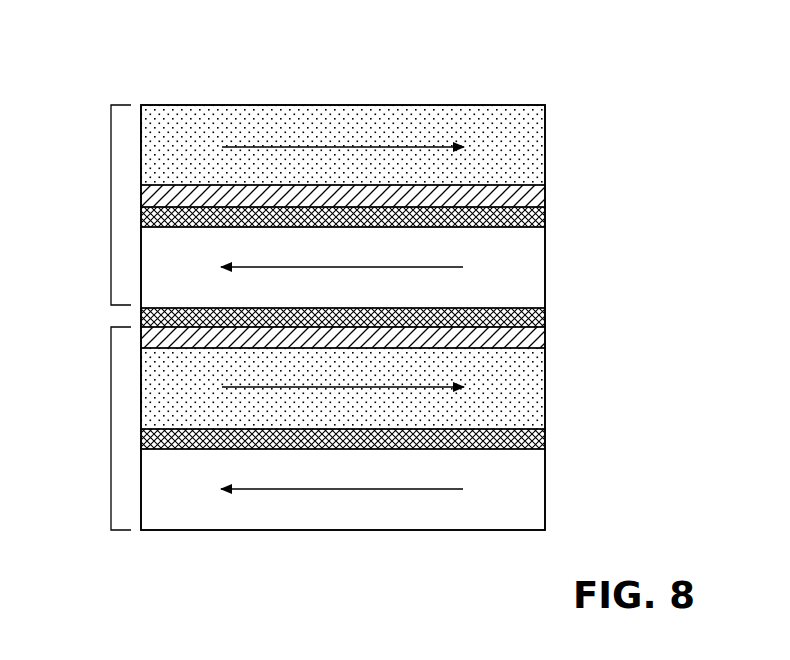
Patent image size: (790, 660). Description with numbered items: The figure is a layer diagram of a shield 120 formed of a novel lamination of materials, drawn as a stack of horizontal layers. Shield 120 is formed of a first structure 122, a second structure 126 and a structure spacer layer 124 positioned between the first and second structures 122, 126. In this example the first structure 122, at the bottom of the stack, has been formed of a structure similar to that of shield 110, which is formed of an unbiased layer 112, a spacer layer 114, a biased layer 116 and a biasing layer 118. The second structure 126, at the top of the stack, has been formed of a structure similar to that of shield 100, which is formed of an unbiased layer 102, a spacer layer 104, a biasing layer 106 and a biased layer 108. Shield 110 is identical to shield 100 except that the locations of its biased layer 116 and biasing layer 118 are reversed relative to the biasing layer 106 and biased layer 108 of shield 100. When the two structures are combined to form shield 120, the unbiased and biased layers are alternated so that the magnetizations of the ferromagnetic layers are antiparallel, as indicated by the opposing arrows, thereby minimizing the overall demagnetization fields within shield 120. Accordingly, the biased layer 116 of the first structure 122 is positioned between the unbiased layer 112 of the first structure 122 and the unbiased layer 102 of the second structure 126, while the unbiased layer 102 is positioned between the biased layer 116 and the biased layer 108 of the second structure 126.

The shield 120 is at (121, 86).
The second structure 126 is at (111, 205).
The shield 100 is at (372, 206).
The biased layer 108 is at (523, 147).
The biasing layer 106 is at (525, 197).
The spacer layer 104 is at (523, 216).
The unbiased layer 102 is at (523, 267).
The structure spacer layer 124 is at (525, 317).
The first structure 122 is at (111, 427).
The shield 110 is at (342, 428).
The biasing layer 118 is at (525, 339).
The biased layer 116 is at (523, 387).
The spacer layer 114 is at (525, 439).
The unbiased layer 112 is at (523, 489).